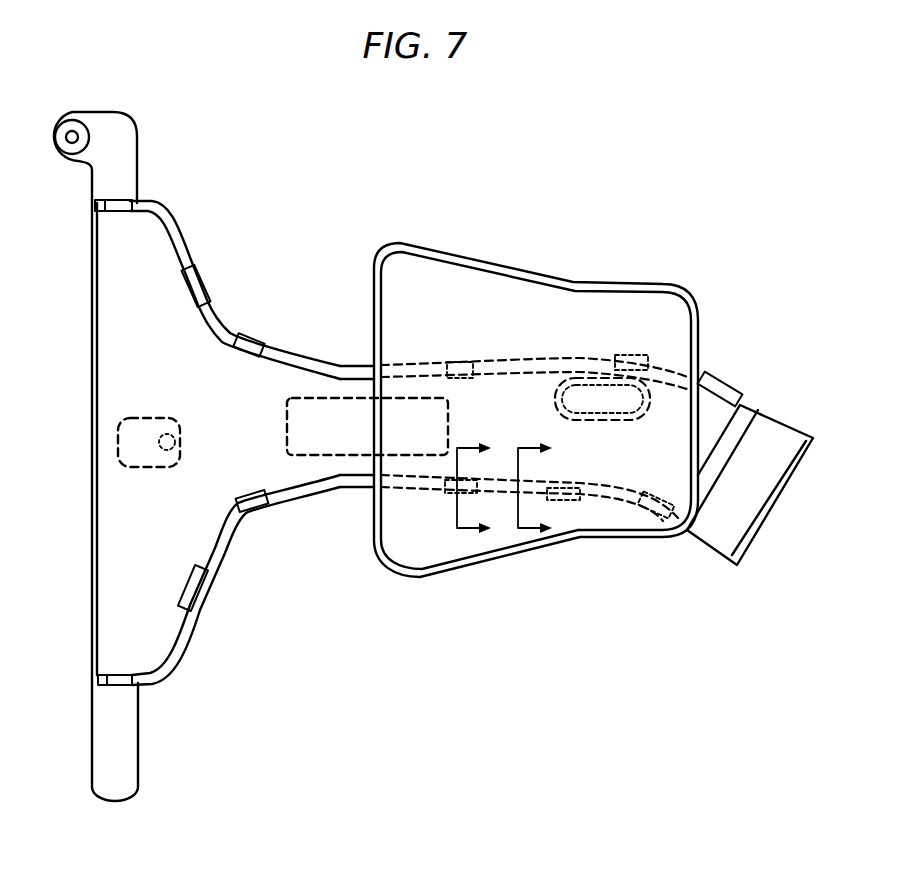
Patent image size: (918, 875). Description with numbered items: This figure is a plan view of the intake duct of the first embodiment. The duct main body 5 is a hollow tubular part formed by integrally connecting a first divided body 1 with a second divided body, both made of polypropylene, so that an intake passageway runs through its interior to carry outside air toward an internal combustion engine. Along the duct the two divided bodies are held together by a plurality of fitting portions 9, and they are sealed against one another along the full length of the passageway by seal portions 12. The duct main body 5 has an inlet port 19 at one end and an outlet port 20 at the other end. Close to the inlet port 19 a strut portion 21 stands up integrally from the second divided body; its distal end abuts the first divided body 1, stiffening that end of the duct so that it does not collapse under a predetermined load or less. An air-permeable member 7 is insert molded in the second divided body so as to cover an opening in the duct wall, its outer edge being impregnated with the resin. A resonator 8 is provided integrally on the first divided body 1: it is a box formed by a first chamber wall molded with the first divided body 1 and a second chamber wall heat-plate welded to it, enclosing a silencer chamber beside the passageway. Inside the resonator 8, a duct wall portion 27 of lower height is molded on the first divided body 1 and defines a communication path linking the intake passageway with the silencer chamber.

The first divided body 1 is at (280, 356).
The duct main body 5 is at (235, 443).
The air-permeable member 7 is at (313, 456).
The resonator 8 is at (616, 268).
The fitting portions 9 is at (123, 201).
The seal portions 12 is at (350, 365).
The inlet port 19 is at (88, 540).
The outlet port 20 is at (790, 496).
The strut portion 21 is at (140, 418).
The duct wall portion 27 is at (585, 378).